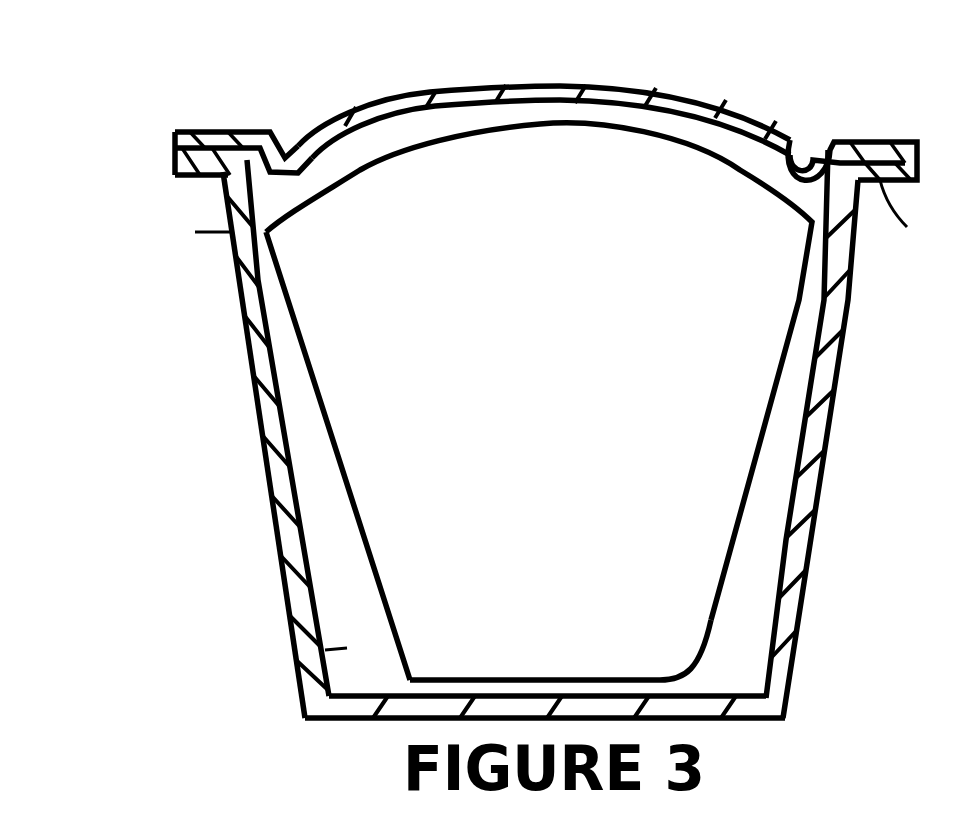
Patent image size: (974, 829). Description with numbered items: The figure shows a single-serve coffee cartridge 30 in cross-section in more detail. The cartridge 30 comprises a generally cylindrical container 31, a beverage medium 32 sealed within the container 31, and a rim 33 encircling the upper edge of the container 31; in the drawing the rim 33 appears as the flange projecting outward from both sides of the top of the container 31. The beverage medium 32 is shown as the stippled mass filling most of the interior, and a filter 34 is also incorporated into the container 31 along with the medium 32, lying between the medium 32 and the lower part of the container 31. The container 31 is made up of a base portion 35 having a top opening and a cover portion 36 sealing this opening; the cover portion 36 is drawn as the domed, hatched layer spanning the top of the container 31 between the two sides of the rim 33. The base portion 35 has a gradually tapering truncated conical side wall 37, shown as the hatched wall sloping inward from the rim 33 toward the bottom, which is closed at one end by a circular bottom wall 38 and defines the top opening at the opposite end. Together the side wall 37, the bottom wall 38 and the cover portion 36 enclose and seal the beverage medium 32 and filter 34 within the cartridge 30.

The single-serve coffee cartridge 30 is at (150, 130).
The container 31 is at (243, 338).
The beverage medium 32 is at (539, 401).
The rim 33 is at (883, 82).
The filter 34 is at (803, 643).
The base portion 35 is at (277, 466).
The cover portion 36 is at (392, 100).
The side wall 37 is at (828, 428).
The bottom wall 38 is at (305, 717).